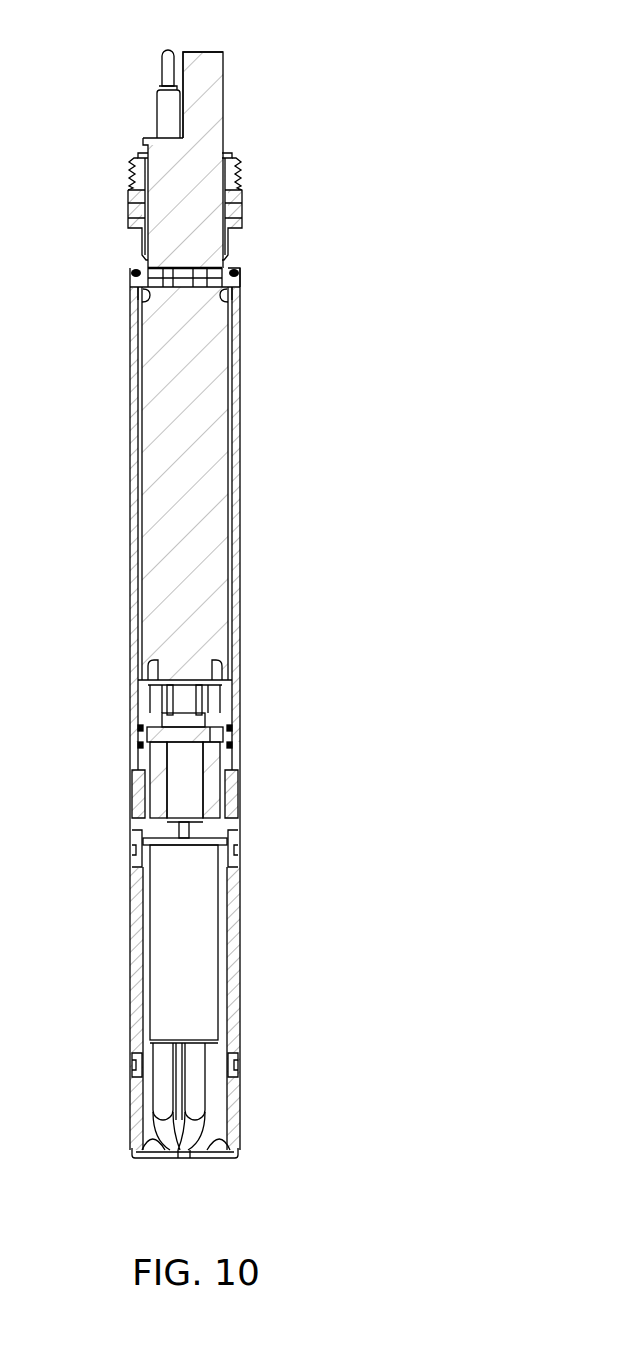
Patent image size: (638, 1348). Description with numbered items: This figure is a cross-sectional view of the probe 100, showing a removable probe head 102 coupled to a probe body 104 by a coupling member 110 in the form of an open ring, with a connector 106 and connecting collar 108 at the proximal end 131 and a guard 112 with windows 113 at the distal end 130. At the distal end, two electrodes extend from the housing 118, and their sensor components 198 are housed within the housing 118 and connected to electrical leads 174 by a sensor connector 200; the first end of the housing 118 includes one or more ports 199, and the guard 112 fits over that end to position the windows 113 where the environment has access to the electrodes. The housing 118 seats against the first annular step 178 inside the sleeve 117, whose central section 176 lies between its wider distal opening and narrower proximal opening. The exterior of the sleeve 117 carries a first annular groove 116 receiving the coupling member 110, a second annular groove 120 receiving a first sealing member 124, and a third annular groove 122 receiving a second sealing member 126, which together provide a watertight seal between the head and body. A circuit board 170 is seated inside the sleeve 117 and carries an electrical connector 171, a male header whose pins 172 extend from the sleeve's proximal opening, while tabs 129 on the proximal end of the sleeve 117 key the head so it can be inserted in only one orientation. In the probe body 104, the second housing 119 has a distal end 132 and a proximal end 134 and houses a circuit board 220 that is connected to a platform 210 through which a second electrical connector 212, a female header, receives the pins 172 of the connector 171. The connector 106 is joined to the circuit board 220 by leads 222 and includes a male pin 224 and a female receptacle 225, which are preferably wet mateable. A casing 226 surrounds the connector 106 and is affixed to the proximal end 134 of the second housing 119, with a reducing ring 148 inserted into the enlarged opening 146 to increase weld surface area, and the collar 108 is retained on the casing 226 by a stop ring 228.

The probe 100 is at (325, 700).
The removable probe head 102 is at (252, 987).
The probe body 104 is at (247, 513).
The connector 106 is at (163, 150).
The connecting collar 108 is at (240, 175).
The coupling member 110 is at (232, 790).
The guard 112 is at (236, 1068).
The windows 113 is at (143, 1152).
The first annular groove 116 is at (205, 800).
The sleeve 117 is at (235, 850).
The housing 118 is at (136, 930).
The second housing 119 is at (134, 400).
The second annular groove 120 is at (165, 738).
The third annular groove 122 is at (139, 728).
The first sealing member 124 is at (232, 745).
The second sealing member 126 is at (232, 727).
The first tab 129 is at (225, 700).
The distal end 130 is at (136, 1065).
The proximal end 131 is at (219, 93).
The distal end 132 is at (134, 580).
The proximal end 134 is at (132, 273).
The enlarged opening 146 is at (227, 300).
The reducing ring 148 is at (238, 272).
The circuit board 170 is at (155, 760).
The electrical connector 171 is at (168, 718).
The connector pins 172 is at (184, 692).
The electrical leads 174 is at (195, 812).
The central section 176 is at (140, 795).
The first annular step 178 is at (138, 848).
The sensor components 198 is at (165, 985).
The ports 199 is at (181, 1152).
The sensor connector 200 is at (185, 842).
The platform 210 is at (152, 665).
The second electrical connector 212 is at (215, 668).
The circuit board 220 is at (150, 490).
The leads 222 is at (145, 291).
The male pin 224 is at (163, 74).
The female receptacle 225 is at (203, 52).
The casing 226 is at (146, 248).
The stop ring 228 is at (131, 158).